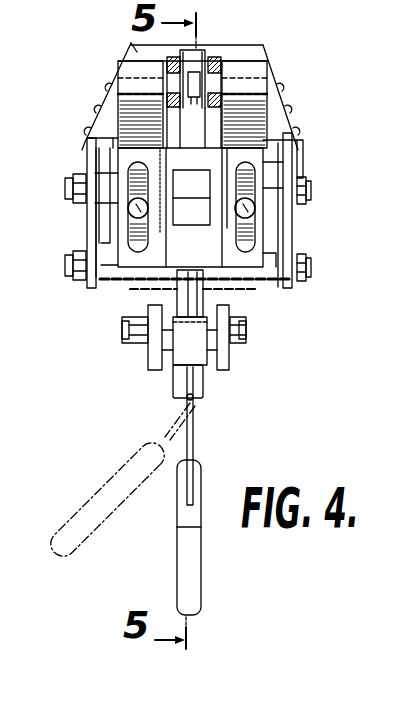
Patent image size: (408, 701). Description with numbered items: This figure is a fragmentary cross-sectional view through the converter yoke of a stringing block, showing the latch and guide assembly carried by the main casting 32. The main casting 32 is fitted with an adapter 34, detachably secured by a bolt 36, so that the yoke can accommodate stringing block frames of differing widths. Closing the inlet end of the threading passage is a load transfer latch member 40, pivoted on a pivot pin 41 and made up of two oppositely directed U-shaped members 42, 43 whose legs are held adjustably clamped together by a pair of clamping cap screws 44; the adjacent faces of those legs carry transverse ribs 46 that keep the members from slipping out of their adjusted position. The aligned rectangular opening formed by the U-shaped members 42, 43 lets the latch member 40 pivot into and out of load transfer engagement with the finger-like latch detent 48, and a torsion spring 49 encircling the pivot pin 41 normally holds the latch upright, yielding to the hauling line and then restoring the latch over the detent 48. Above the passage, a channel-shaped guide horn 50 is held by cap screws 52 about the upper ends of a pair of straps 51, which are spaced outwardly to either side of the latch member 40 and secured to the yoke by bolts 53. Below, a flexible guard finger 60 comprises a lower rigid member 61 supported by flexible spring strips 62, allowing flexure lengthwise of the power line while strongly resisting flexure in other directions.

The main casting 32 is at (219, 50).
The adapter 34 is at (229, 365).
The bolt 36 is at (245, 335).
The latch member 40 is at (272, 50).
The pivot pin 41 is at (124, 55).
The U-shaped member 42 is at (280, 117).
The U-shaped member 43 is at (275, 228).
The clamping cap screw 44 is at (243, 210).
The transverse ribs 46 is at (292, 138).
The latch detent 48 is at (191, 197).
The torsion spring 49 is at (198, 127).
The guide horn 50 is at (131, 45).
The strap 51 is at (92, 208).
The cap screw 52 is at (98, 98).
The bolt 53 is at (68, 191).
The guard finger 60 is at (202, 443).
The lower rigid member 61 is at (193, 574).
The spring strip 62 is at (188, 392).